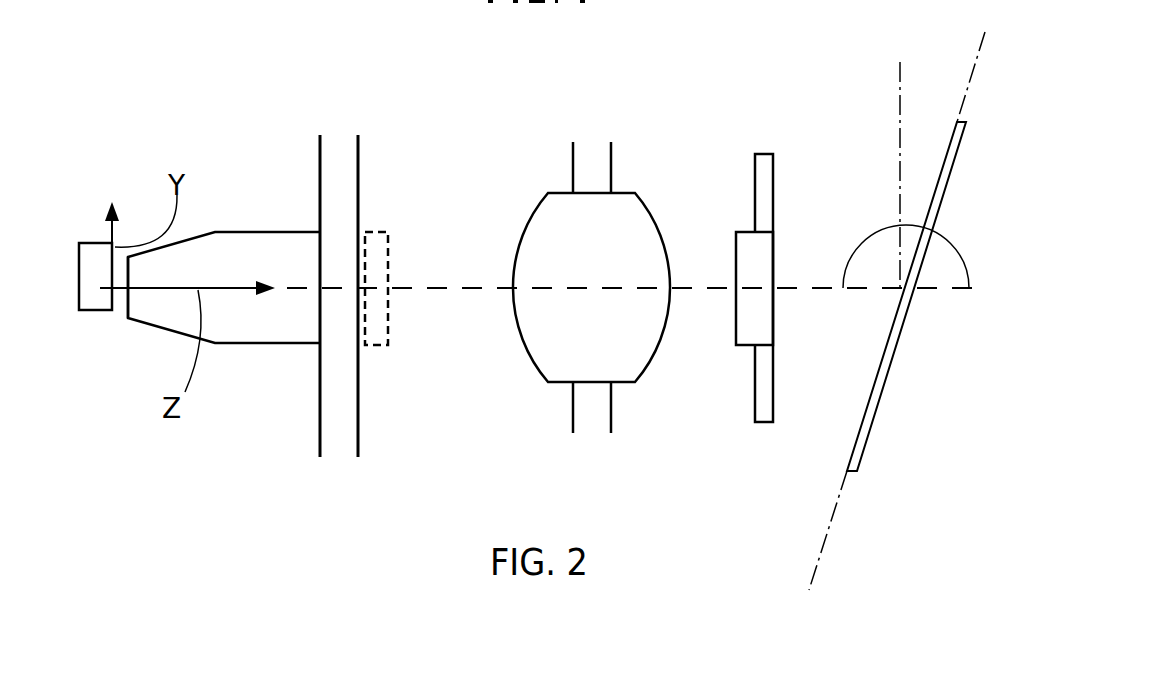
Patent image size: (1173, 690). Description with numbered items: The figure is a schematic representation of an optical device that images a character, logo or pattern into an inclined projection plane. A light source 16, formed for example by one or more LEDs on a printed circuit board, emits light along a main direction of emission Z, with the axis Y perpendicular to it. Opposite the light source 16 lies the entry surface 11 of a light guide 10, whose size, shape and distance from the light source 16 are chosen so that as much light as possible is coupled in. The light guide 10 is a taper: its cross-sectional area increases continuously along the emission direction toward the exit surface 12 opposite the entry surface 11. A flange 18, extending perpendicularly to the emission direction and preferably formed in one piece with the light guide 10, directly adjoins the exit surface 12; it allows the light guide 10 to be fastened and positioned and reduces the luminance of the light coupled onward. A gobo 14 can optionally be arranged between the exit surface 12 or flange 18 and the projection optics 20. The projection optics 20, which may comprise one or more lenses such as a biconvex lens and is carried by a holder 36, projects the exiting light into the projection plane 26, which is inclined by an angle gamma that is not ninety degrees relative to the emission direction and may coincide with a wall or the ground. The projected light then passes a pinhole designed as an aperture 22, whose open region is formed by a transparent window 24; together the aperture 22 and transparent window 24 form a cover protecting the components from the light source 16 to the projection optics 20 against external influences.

The light guide 10 is at (232, 230).
The entry surface 11 is at (125, 308).
The exit surface 12 is at (322, 308).
The gobo 14 is at (388, 247).
The light source 16 is at (93, 253).
The flange 18 is at (360, 170).
The projection optics 20 is at (623, 192).
The aperture 22 is at (767, 178).
The transparent window 24 is at (747, 328).
The projection plane 26 is at (968, 84).
The holder 36 is at (572, 420).